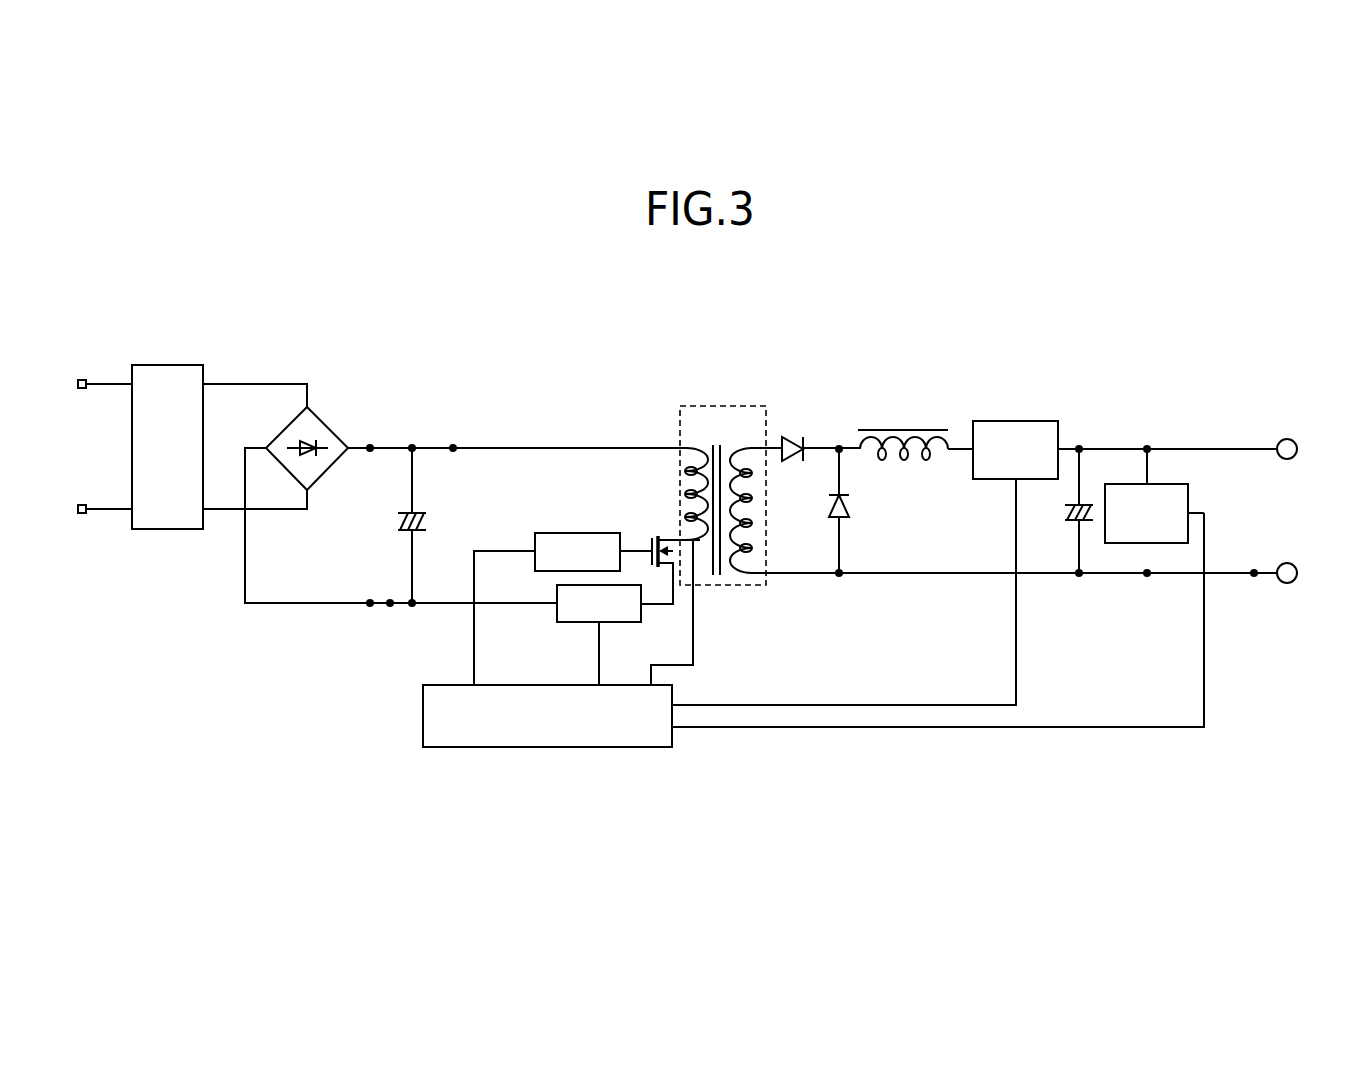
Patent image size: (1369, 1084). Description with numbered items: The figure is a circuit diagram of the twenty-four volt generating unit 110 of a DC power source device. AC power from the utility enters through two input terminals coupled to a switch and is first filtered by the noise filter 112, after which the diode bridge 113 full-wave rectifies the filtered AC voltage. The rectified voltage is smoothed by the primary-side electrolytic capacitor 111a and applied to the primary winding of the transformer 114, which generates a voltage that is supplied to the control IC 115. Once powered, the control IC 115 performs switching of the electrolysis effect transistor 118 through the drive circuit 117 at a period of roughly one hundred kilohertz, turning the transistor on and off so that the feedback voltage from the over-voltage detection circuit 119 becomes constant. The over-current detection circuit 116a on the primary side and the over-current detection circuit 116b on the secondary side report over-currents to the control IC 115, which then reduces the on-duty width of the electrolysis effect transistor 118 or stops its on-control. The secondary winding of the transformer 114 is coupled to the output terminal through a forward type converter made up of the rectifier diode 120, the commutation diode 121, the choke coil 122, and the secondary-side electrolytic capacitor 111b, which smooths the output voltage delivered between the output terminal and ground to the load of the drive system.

The 24 V generating unit 110 is at (646, 336).
The electrolytic capacitor (C1) 111a is at (420, 508).
The electrolytic capacitor (C2) 111b is at (1089, 503).
The noise filter (N.F) 112 is at (171, 365).
The diode bridge (DB1) 113 is at (318, 418).
The transformer (T1) 114 is at (727, 407).
The control integrated circuit (IC) 115 is at (530, 748).
The over-current detection circuit (ISEN1) 116a is at (575, 622).
The over-current detection circuit (ISEN2) 116b is at (1016, 421).
The drive circuit (DRIV1) 117 is at (556, 533).
The electrolysis effect transistor (FET1) 118 is at (670, 572).
The over-voltage detection circuit (VSEN2) 119 is at (1165, 484).
The rectifier diode (D1) 120 is at (790, 436).
The commutation diode (D2) 121 is at (846, 520).
The choke coil (CH1) 122 is at (874, 430).